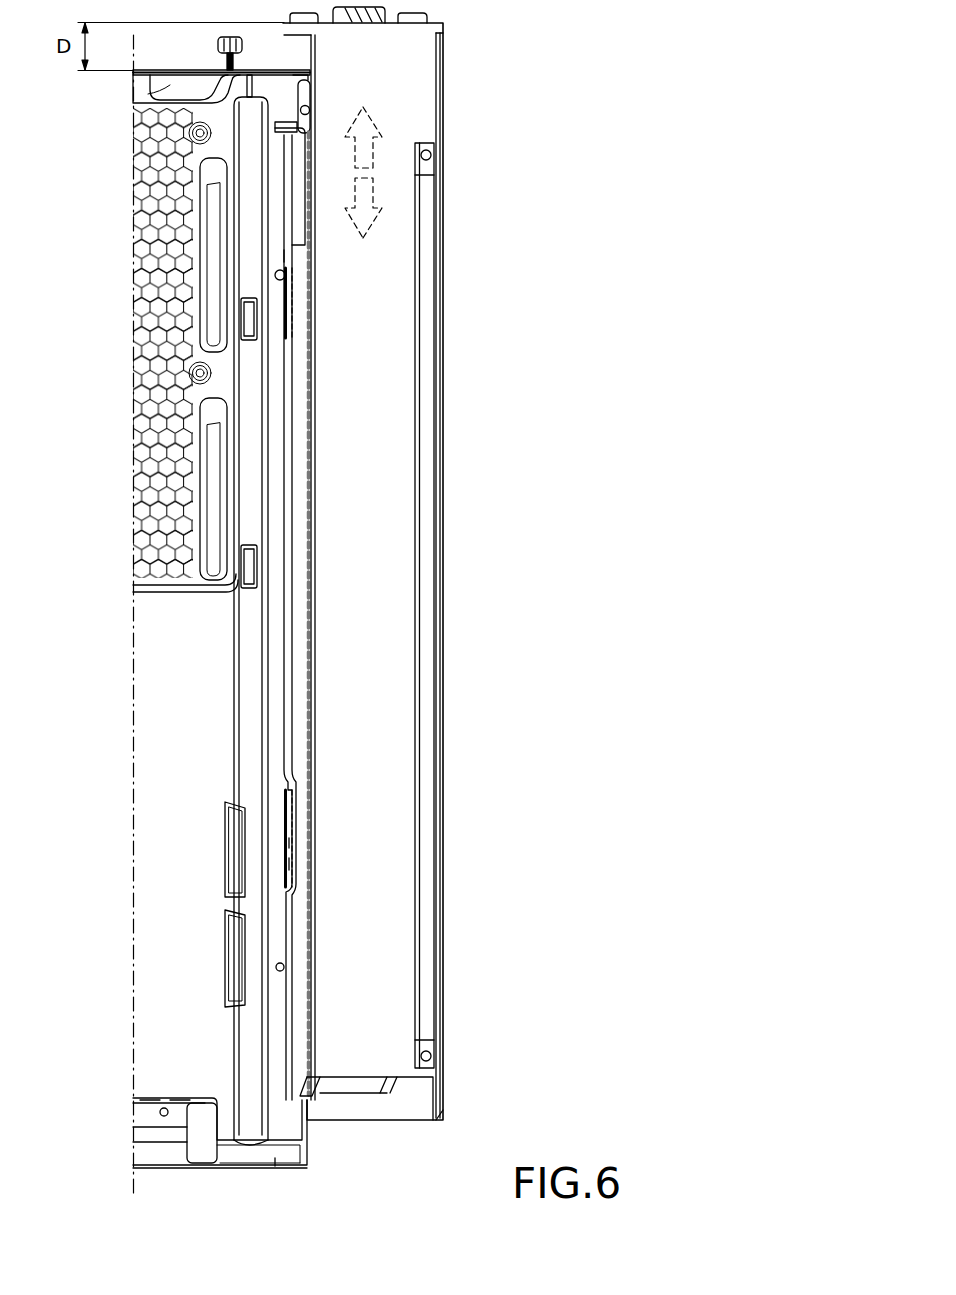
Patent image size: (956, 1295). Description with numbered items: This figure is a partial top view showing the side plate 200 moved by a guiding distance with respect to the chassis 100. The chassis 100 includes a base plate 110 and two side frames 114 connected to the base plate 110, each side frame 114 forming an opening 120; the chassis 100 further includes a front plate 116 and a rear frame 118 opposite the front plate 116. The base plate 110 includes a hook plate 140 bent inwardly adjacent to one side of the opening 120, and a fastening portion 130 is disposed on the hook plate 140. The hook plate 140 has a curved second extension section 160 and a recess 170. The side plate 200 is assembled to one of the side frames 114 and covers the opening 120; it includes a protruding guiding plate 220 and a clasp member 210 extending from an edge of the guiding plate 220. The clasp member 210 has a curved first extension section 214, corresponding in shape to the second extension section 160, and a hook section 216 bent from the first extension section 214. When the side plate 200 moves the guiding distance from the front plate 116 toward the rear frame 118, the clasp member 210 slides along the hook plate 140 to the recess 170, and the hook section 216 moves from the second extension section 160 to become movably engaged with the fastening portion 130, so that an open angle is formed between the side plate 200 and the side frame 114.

The chassis 100 is at (125, 700).
The base plate 110 is at (155, 882).
The side frame 114 is at (305, 125).
The front plate 116 is at (290, 1170).
The rear frame 118 is at (148, 94).
The opening 120 is at (248, 672).
The fastening portion 130 is at (292, 274).
The hook plate 140 is at (508, 315).
The second extension section 160 is at (294, 308).
The recess 170 is at (294, 358).
The side plate 200 is at (400, 758).
The clasp member 210 is at (508, 840).
The first extension section 214 is at (296, 864).
The hook section 216 is at (294, 843).
The guiding plate 220 is at (291, 563).